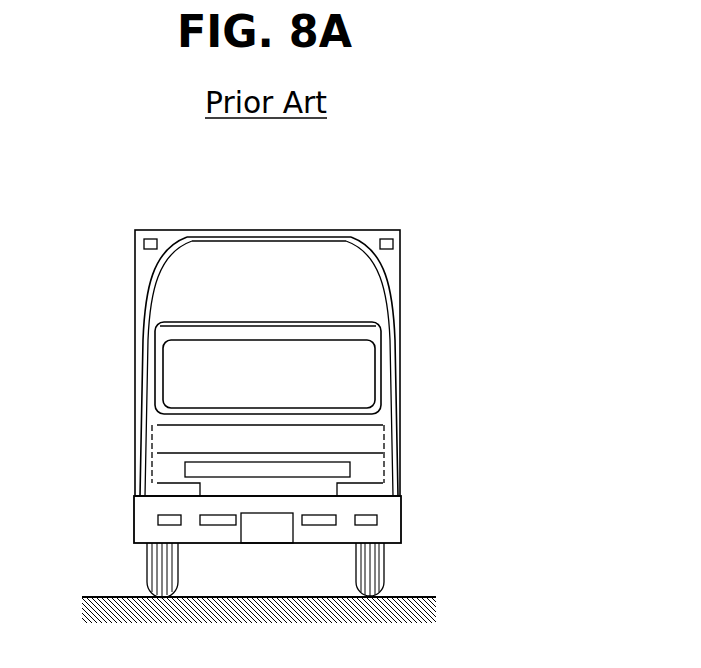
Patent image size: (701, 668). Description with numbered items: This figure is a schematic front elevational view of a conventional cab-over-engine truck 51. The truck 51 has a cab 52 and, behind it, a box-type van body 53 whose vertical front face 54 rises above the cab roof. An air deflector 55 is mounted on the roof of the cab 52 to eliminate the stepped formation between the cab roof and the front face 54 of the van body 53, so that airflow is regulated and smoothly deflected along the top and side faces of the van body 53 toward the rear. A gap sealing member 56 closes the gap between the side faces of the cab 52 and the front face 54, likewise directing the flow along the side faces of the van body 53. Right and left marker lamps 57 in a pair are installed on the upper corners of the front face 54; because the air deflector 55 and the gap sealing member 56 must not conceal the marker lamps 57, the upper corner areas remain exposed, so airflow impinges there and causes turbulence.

The truck 51 is at (449, 346).
The cab 52 is at (393, 429).
The van body 53 is at (403, 248).
The vertical front face 54 is at (395, 272).
The air deflector 55 is at (270, 265).
The gap sealing member 56 is at (150, 320).
The marker lamps 57 is at (147, 238).